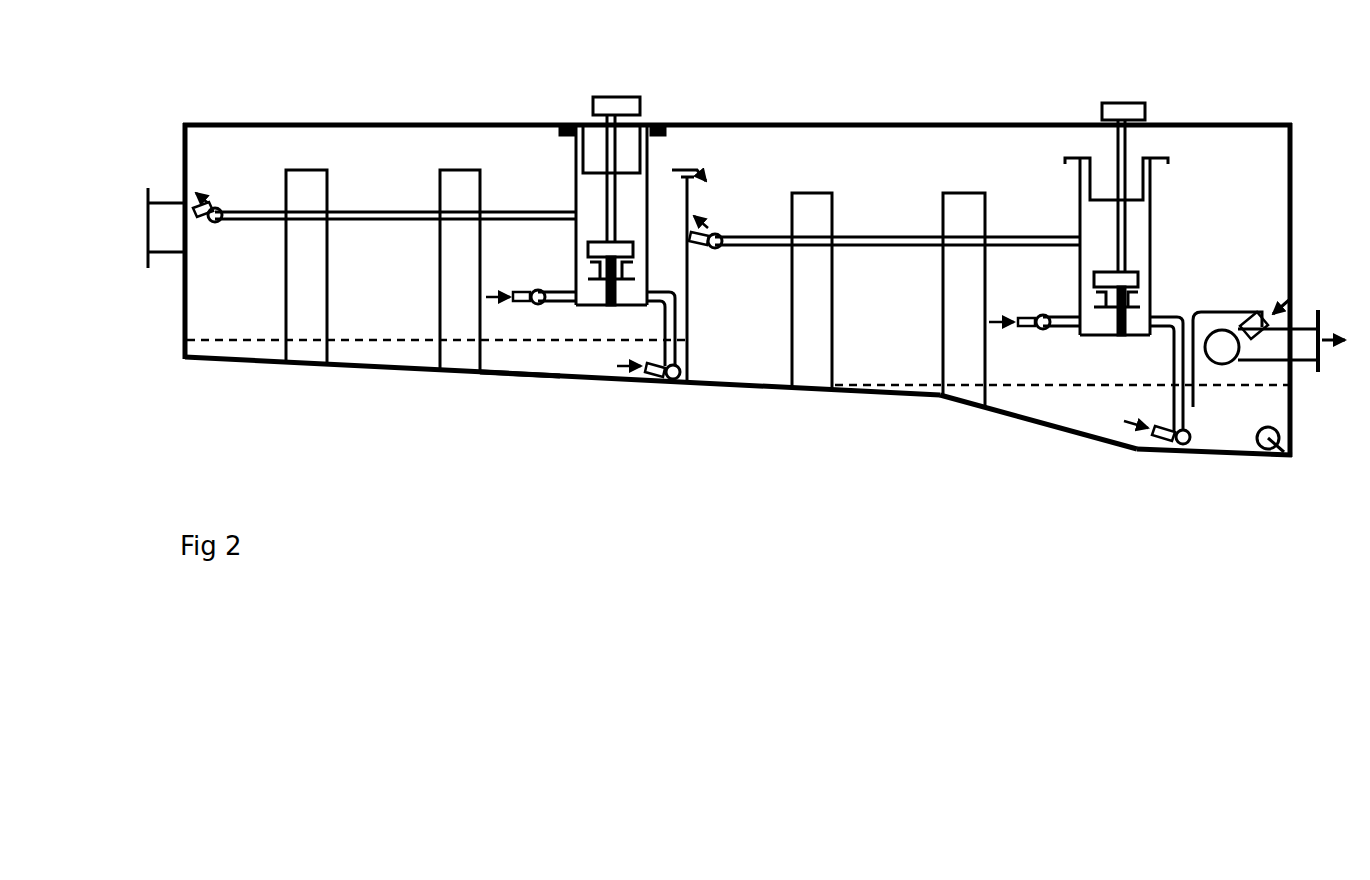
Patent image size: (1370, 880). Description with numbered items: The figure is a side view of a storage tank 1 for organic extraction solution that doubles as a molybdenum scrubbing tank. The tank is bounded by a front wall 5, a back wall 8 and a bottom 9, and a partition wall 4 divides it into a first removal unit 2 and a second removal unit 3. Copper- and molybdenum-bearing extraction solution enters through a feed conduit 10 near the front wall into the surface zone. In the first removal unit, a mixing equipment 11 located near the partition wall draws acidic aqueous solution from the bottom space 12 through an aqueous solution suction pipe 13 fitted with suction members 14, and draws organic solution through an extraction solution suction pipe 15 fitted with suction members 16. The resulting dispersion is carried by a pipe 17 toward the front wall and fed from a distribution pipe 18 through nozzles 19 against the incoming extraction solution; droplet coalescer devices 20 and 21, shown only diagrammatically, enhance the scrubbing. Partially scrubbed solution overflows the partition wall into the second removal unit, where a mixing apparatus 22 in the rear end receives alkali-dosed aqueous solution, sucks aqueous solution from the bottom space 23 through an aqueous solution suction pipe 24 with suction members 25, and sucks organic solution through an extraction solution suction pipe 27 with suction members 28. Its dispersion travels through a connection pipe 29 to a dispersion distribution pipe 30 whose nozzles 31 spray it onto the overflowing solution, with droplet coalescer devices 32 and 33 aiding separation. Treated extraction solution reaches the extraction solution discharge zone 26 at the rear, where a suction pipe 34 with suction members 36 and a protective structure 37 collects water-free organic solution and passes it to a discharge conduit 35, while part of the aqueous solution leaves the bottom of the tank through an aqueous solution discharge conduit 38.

The storage tank 1 is at (455, 54).
The first removal unit 2 is at (262, 318).
The second removal unit 3 is at (875, 372).
The partition wall 4 is at (690, 197).
The front wall 5 is at (185, 282).
The back wall 8 is at (1292, 196).
The bottom 9 is at (600, 386).
The feed conduit 10 is at (168, 237).
The mixing equipment 11 is at (570, 240).
The bottom space 12 is at (518, 366).
The aqueous solution suction pipe 13 is at (681, 392).
The suction members 14 is at (652, 390).
The extraction solution suction pipe 15 is at (548, 304).
The suction members 16 is at (532, 304).
The pipe 17 is at (348, 213).
The distribution pipe 18 is at (214, 233).
The nozzles 19 is at (202, 201).
The droplet coalescer device 20 is at (316, 258).
The droplet coalescer device 21 is at (430, 252).
The mixing apparatus 22 is at (1152, 224).
The bottom space 23 is at (1212, 440).
The aqueous solution suction pipe 24 is at (1172, 453).
The suction members 25 is at (1150, 448).
The extraction solution discharge zone 26 is at (1263, 372).
The extraction solution suction pipe 27 is at (1046, 332).
The suction members 28 is at (1029, 314).
The connection pipe 29 is at (905, 249).
The dispersion distribution pipe 30 is at (720, 250).
The nozzles 31 is at (700, 246).
The droplet coalescer device 32 is at (818, 282).
The droplet coalescer device 33 is at (946, 326).
The suction pipe 34 is at (1061, 402).
The discharge conduit 35 is at (1297, 320).
The suction members 36 is at (1232, 323).
The protective structure 37 is at (1248, 308).
The aqueous solution discharge conduit 38 is at (1289, 455).